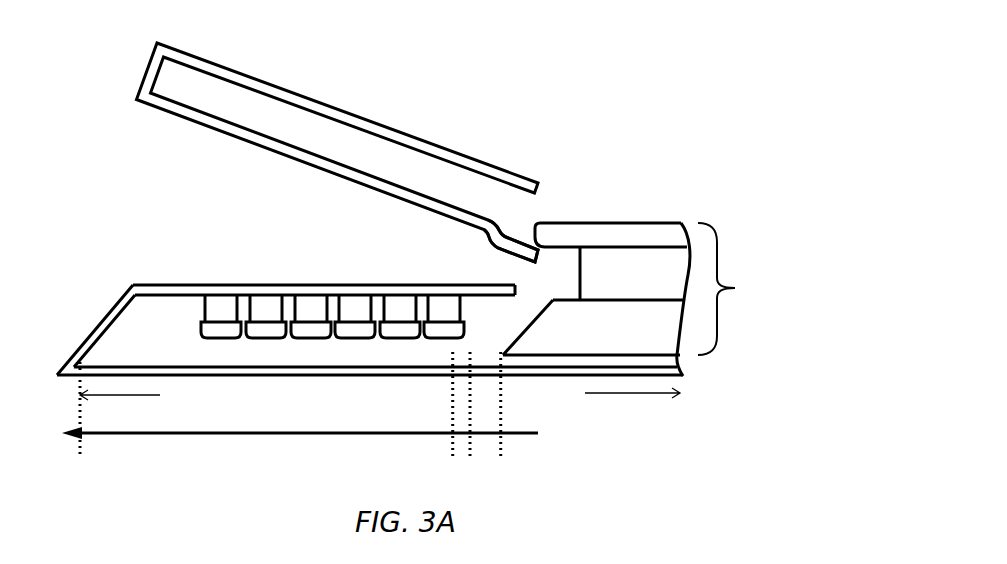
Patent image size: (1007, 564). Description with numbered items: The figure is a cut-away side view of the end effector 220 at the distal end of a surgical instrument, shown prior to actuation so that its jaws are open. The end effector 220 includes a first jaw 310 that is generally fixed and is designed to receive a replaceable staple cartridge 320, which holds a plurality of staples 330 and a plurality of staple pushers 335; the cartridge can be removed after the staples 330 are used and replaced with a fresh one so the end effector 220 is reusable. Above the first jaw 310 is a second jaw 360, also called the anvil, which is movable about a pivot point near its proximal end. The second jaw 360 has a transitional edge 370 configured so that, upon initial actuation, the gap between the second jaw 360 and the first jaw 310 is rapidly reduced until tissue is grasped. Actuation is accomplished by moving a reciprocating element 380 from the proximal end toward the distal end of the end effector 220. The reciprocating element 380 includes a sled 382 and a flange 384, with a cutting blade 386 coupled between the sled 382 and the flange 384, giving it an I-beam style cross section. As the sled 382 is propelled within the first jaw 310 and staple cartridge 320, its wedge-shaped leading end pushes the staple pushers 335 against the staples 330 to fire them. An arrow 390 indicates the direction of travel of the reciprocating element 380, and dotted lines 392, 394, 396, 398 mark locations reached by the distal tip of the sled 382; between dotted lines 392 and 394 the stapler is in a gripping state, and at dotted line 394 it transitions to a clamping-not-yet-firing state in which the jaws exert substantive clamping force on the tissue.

The end effector 220 is at (656, 56).
The first jaw 310 is at (250, 368).
The staple cartridge 320 is at (133, 340).
The staples 330 is at (220, 302).
The staple pushers 335 is at (267, 330).
The second jaw 360 is at (222, 62).
The transitional edge 370 is at (507, 230).
The reciprocating element 380 is at (669, 299).
The sled 382 is at (523, 350).
The flange 384 is at (600, 222).
The cutting blade 386 is at (578, 282).
The arrow 390 is at (538, 433).
The dotted line 392 is at (501, 458).
The dotted line 394 is at (470, 458).
The dotted line 396 is at (453, 458).
The dotted line 398 is at (80, 460).